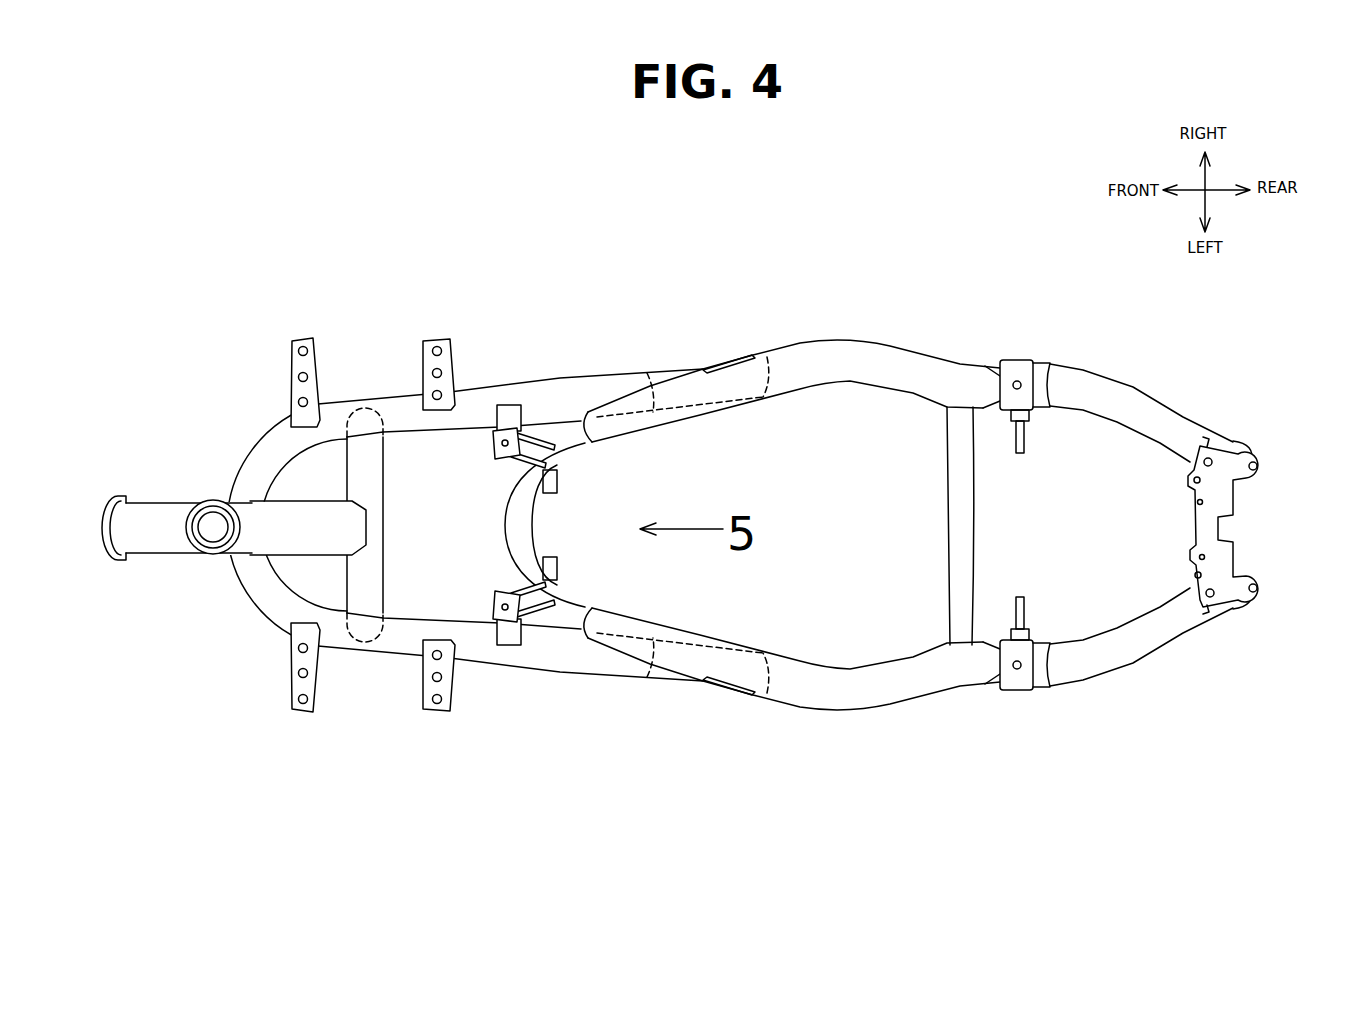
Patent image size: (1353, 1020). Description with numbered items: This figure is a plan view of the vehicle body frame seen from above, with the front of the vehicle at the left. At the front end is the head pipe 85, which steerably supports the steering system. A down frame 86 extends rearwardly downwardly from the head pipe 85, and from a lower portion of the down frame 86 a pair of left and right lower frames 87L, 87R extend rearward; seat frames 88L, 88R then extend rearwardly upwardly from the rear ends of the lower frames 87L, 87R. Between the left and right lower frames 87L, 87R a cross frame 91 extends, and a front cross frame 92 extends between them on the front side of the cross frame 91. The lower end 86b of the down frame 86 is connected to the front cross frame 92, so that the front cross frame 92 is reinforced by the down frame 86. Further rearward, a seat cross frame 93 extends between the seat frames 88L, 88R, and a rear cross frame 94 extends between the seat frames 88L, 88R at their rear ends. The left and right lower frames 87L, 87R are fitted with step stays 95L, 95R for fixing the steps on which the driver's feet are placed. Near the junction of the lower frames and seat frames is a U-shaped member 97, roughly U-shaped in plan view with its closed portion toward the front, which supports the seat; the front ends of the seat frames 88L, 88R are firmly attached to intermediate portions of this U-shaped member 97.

The head pipe 85 is at (158, 523).
The down frame 86 is at (303, 533).
The lower end of the down frame 86b is at (355, 525).
The right lower frame 87R is at (493, 393).
The left lower frame 87L is at (478, 652).
The right seat frame 88R is at (881, 362).
The left seat frame 88L is at (887, 683).
The cross frame 91 is at (547, 519).
The front cross frame 92 is at (370, 470).
The seat cross frame 93 is at (963, 520).
The rear cross frame 94 is at (1225, 498).
The right step stay 95R is at (437, 338).
The left step stay 95L is at (437, 710).
The U-shaped member 97 is at (517, 521).